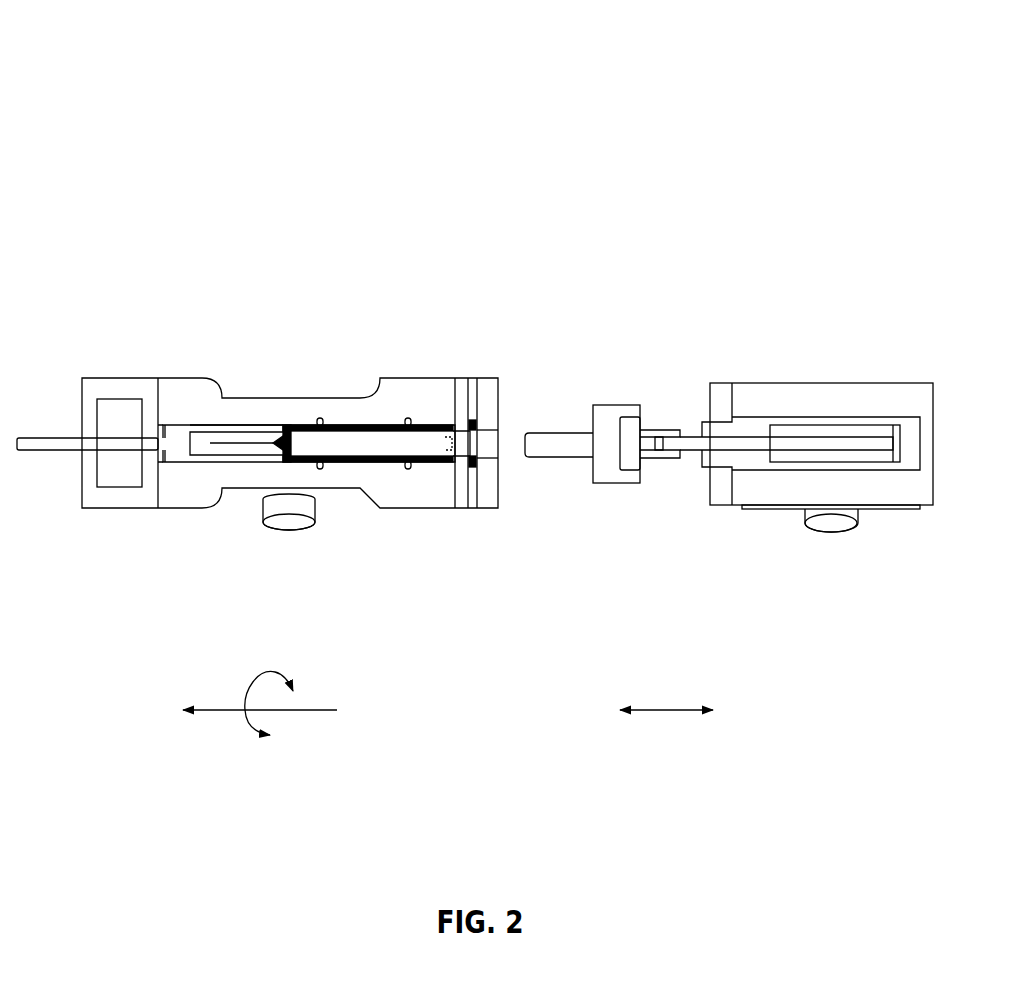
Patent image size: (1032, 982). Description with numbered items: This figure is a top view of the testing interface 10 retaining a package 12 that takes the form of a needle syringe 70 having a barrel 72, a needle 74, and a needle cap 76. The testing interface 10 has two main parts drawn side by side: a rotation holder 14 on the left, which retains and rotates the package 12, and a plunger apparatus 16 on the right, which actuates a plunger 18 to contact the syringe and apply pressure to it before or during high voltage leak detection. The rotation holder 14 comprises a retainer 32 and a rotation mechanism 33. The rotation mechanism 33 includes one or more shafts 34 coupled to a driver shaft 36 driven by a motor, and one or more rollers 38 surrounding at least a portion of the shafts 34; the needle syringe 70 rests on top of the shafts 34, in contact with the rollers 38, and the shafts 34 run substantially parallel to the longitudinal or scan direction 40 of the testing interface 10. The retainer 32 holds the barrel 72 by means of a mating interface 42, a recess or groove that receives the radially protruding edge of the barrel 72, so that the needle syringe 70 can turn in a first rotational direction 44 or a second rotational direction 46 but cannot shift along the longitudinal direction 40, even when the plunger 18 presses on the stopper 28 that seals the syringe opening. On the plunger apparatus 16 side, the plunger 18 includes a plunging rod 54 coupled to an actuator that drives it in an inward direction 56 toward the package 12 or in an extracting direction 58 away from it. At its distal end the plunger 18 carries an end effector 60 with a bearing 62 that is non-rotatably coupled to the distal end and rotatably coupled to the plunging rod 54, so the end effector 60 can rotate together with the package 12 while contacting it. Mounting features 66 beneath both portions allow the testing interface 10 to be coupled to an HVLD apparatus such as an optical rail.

The testing interface 10 is at (152, 130).
The package 12 is at (371, 423).
The rotation holder 14 is at (297, 272).
The plunger apparatus 16 is at (697, 272).
The plunger 18 is at (623, 387).
The stopper 28 is at (462, 464).
The retainer 32 is at (498, 368).
The rotation mechanism 33 is at (83, 348).
The shafts 34 is at (182, 415).
The driver shaft 36 is at (50, 428).
The rollers 38 is at (320, 467).
The longitudinal direction 40 is at (285, 711).
The mating interface 42 is at (478, 368).
The first rotational direction 44 is at (274, 734).
The second rotational direction 46 is at (288, 691).
The plunging rod 54 is at (692, 468).
The inward direction 56 is at (623, 709).
The extracting direction 58 is at (713, 709).
The end effector 60 is at (565, 477).
The bearing 62 is at (637, 492).
The mounting features 66 is at (275, 547).
The needle syringe 70 is at (395, 408).
The barrel 72 is at (385, 462).
The needle 74 is at (260, 438).
The needle cap 76 is at (233, 427).